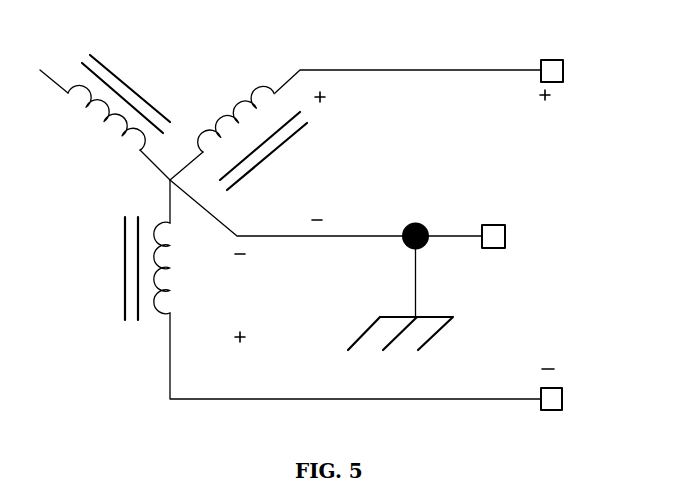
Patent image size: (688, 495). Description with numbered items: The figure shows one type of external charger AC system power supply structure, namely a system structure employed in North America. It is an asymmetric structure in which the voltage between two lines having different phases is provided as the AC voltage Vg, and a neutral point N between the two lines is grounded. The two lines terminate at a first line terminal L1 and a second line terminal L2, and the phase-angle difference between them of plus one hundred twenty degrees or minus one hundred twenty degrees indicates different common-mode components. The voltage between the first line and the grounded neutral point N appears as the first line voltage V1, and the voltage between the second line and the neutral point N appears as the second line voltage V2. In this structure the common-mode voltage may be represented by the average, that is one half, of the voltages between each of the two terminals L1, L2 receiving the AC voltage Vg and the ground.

The first line terminal L1 is at (569, 79).
The second line terminal L2 is at (570, 392).
The neutral point N is at (426, 287).
The first line voltage V1 is at (290, 137).
The second line voltage V2 is at (332, 289).
The AC voltage Vg is at (549, 206).